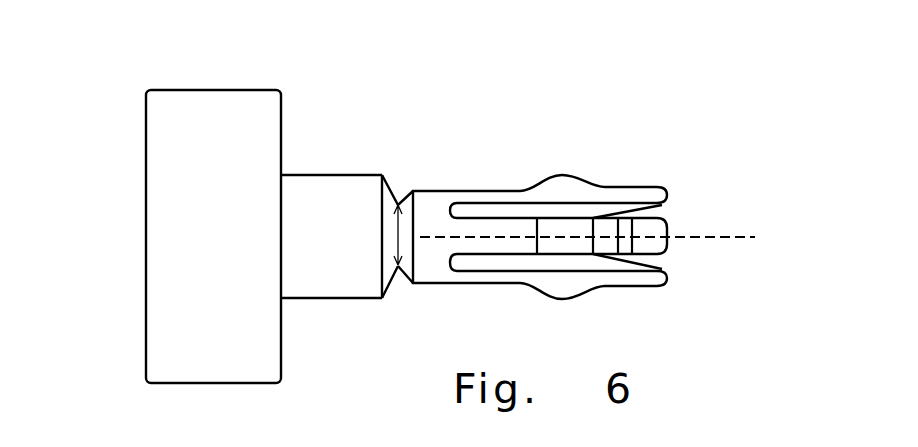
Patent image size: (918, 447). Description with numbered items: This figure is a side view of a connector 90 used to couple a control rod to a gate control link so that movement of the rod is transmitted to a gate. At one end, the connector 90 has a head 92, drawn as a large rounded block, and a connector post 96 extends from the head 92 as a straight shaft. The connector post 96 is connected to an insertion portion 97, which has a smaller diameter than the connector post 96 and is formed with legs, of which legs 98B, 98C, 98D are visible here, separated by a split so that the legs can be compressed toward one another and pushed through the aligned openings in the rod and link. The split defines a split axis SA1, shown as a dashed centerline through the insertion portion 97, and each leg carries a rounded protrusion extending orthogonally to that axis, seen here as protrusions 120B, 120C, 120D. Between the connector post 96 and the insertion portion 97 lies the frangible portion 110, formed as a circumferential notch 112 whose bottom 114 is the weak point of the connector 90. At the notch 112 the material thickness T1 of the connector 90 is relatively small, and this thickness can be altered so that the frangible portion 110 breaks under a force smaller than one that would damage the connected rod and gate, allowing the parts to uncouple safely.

The connector 90 is at (204, 82).
The head 92 is at (146, 180).
The connector post 96 is at (307, 174).
The insertion portion 97 is at (433, 190).
The frangible portion 110 is at (400, 292).
The notch 112 is at (392, 289).
The bottom 114 is at (404, 266).
The material thickness T1 is at (398, 232).
The protrusion 120B is at (574, 175).
The protrusion 120C is at (553, 230).
The protrusion 120D is at (567, 299).
The leg 98B is at (643, 187).
The leg 98C is at (667, 252).
The leg 98D is at (638, 286).
The split axis SA1 is at (711, 236).